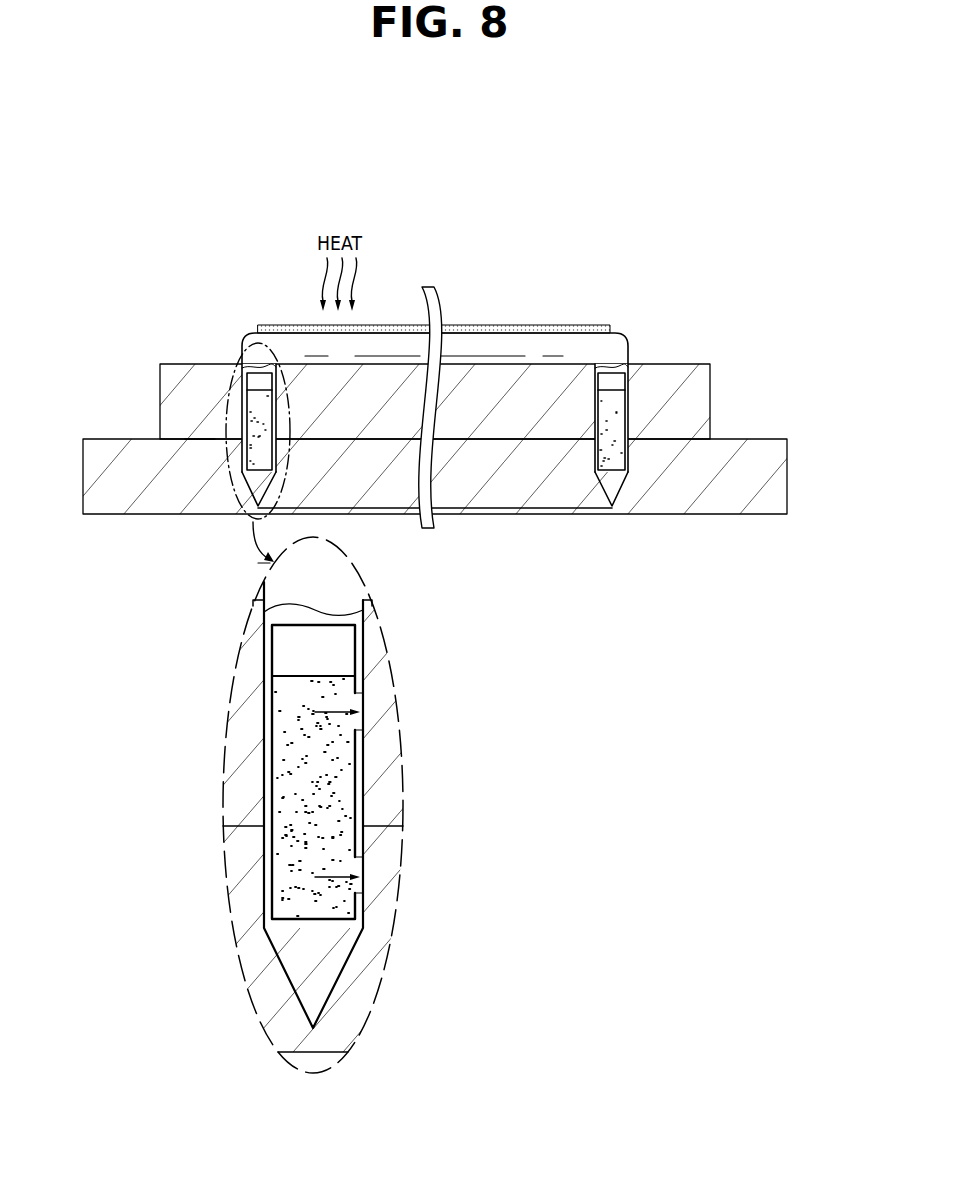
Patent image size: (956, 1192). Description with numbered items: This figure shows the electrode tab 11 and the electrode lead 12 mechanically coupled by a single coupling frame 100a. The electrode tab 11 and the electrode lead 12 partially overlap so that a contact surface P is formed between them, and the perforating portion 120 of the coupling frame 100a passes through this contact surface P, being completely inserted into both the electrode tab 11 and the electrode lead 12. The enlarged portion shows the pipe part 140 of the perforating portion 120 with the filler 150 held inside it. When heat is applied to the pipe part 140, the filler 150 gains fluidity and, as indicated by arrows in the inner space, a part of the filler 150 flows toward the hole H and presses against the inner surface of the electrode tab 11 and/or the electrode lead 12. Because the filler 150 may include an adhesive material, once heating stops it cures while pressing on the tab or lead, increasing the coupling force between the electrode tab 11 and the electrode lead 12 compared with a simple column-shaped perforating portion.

The coupling frame 100a is at (473, 269).
The perforating portion 120 is at (240, 344).
The electrode tab 11 is at (668, 364).
The electrode lead 12 is at (751, 439).
The contact surface P is at (201, 439).
The pipe part 140 is at (285, 615).
The filler 150 is at (296, 780).
The hole H is at (357, 704).